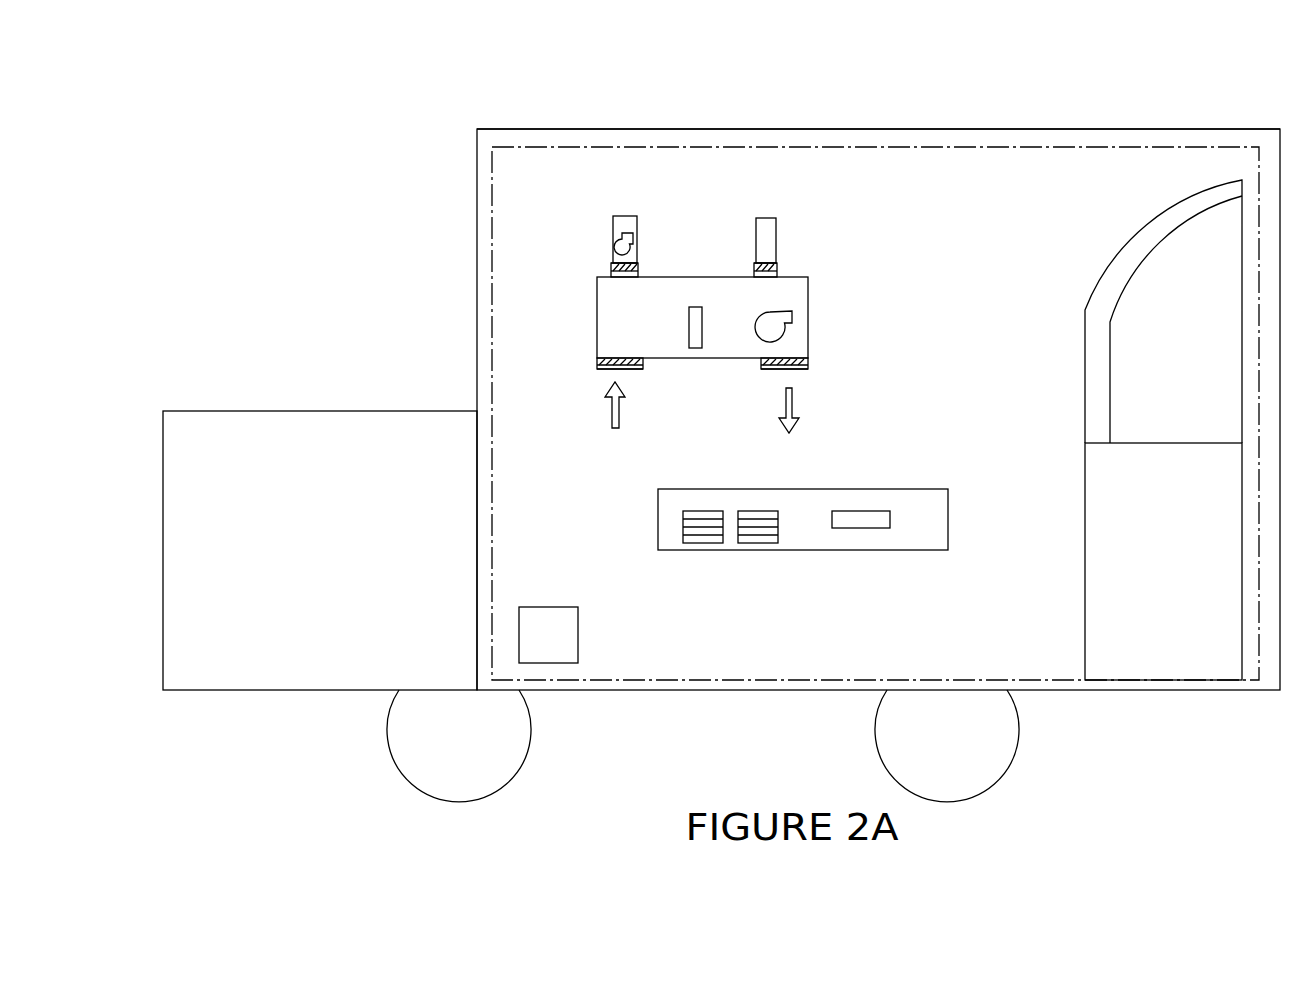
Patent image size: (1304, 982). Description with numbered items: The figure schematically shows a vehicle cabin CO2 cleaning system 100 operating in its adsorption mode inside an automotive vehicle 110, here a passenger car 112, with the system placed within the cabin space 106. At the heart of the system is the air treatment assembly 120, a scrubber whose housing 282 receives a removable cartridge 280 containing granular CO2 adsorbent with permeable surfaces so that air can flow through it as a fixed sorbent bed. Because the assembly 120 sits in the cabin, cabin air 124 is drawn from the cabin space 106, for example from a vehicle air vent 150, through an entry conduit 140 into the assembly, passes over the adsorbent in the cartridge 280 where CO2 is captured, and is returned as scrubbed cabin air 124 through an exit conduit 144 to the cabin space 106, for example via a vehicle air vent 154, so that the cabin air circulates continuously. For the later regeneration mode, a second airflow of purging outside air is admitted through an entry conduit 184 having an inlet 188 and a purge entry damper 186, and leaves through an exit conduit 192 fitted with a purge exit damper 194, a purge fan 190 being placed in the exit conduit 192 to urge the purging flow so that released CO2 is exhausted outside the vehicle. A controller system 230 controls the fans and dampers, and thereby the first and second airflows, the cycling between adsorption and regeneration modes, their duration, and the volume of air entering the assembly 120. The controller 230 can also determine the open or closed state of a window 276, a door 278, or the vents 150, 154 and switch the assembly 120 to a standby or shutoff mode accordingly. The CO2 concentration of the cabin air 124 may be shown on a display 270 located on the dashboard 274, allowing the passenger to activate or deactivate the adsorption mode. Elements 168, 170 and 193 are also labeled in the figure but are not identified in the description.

The vehicle cabin CO2 cleaning system 100 is at (167, 89).
The cabin space 106 is at (988, 147).
The automotive vehicle 110 is at (478, 130).
The passenger car 112 is at (592, 129).
The air treatment assembly 120 is at (597, 277).
The cabin air 124 is at (615, 430).
The entry conduit 140 is at (600, 370).
The exit conduit 144 is at (806, 368).
The vehicle air vent 150 is at (760, 543).
The vehicle air vent 154 is at (705, 543).
The inlet damper 168 is at (597, 358).
The outlet damper 170 is at (807, 361).
The entry conduit 184 is at (776, 252).
The purge entry damper 186 is at (755, 267).
The inlet 188 is at (777, 273).
The purge fan 190 is at (633, 248).
The exit conduit 192 is at (633, 230).
The intake damper 193 is at (610, 272).
The purge exit damper 194 is at (612, 272).
The controller system 230 is at (547, 663).
The display 270 is at (860, 528).
The dashboard 274 is at (948, 519).
The window 276 is at (1173, 275).
The door 278 is at (1162, 517).
The cartridge 280 is at (700, 348).
The housing 282 is at (808, 317).